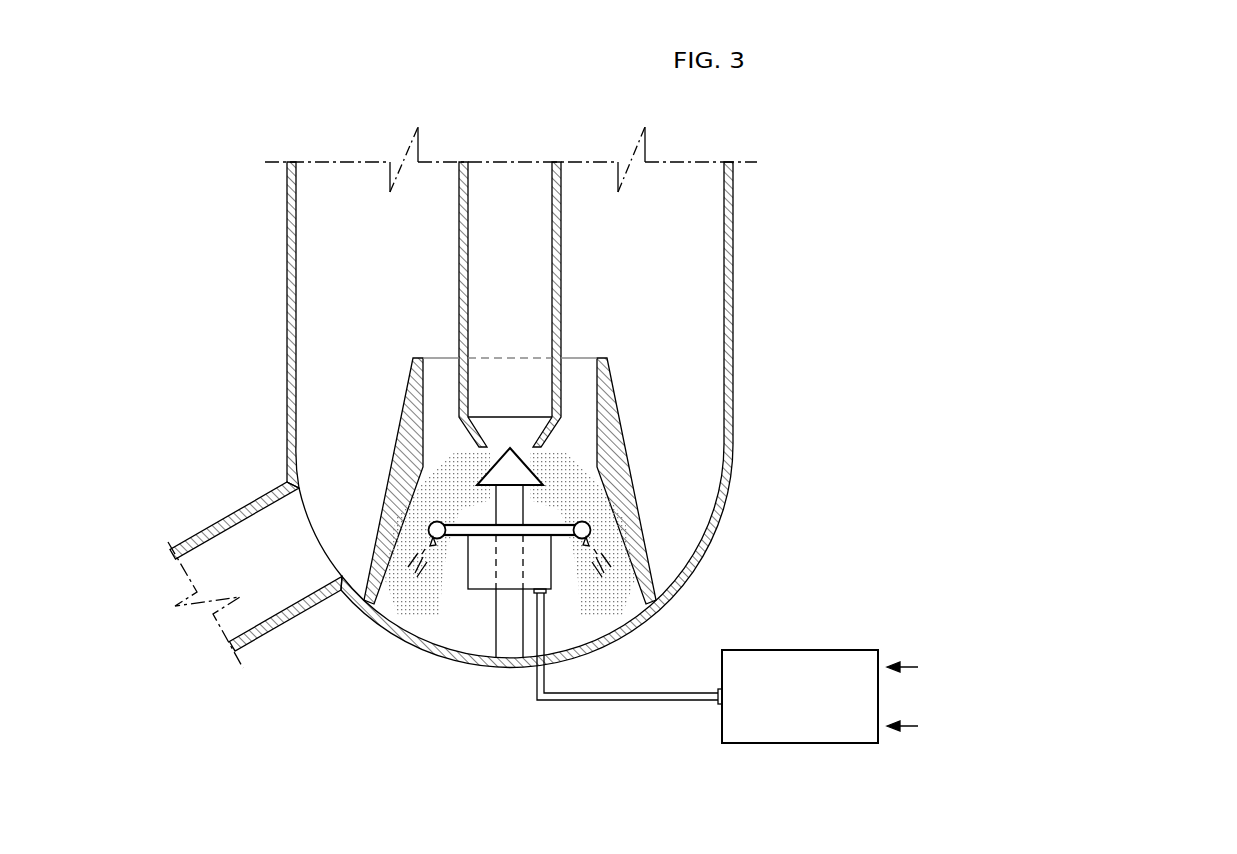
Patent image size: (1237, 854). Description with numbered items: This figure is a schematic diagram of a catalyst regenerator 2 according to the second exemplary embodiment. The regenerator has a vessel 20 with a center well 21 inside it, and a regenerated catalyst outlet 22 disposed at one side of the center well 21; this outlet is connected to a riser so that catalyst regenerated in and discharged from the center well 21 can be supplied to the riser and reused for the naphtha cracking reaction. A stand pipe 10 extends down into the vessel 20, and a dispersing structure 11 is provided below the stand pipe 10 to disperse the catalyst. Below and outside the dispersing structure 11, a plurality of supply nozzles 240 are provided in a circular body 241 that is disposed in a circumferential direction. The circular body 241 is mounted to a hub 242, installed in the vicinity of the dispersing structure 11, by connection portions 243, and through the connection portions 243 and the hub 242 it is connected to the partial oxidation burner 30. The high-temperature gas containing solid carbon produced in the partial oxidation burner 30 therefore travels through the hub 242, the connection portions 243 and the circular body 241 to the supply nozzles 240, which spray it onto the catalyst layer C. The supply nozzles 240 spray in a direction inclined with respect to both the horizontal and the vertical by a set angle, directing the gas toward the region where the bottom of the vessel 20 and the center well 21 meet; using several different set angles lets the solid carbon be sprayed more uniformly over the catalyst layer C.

The catalyst regenerator 2 is at (504, 117).
The stand pipe 10 is at (561, 212).
The dispersing structure 11 is at (515, 467).
The vessel 20 is at (296, 280).
The center well 21 is at (413, 418).
The regenerated catalyst outlet 22 is at (206, 528).
The partial oxidation burner 30 is at (807, 652).
The supply nozzle 240 is at (592, 533).
The circular body 241 is at (590, 522).
The hub 242 is at (540, 575).
The connection portion 243 is at (550, 523).
The catalyst layer C is at (565, 476).